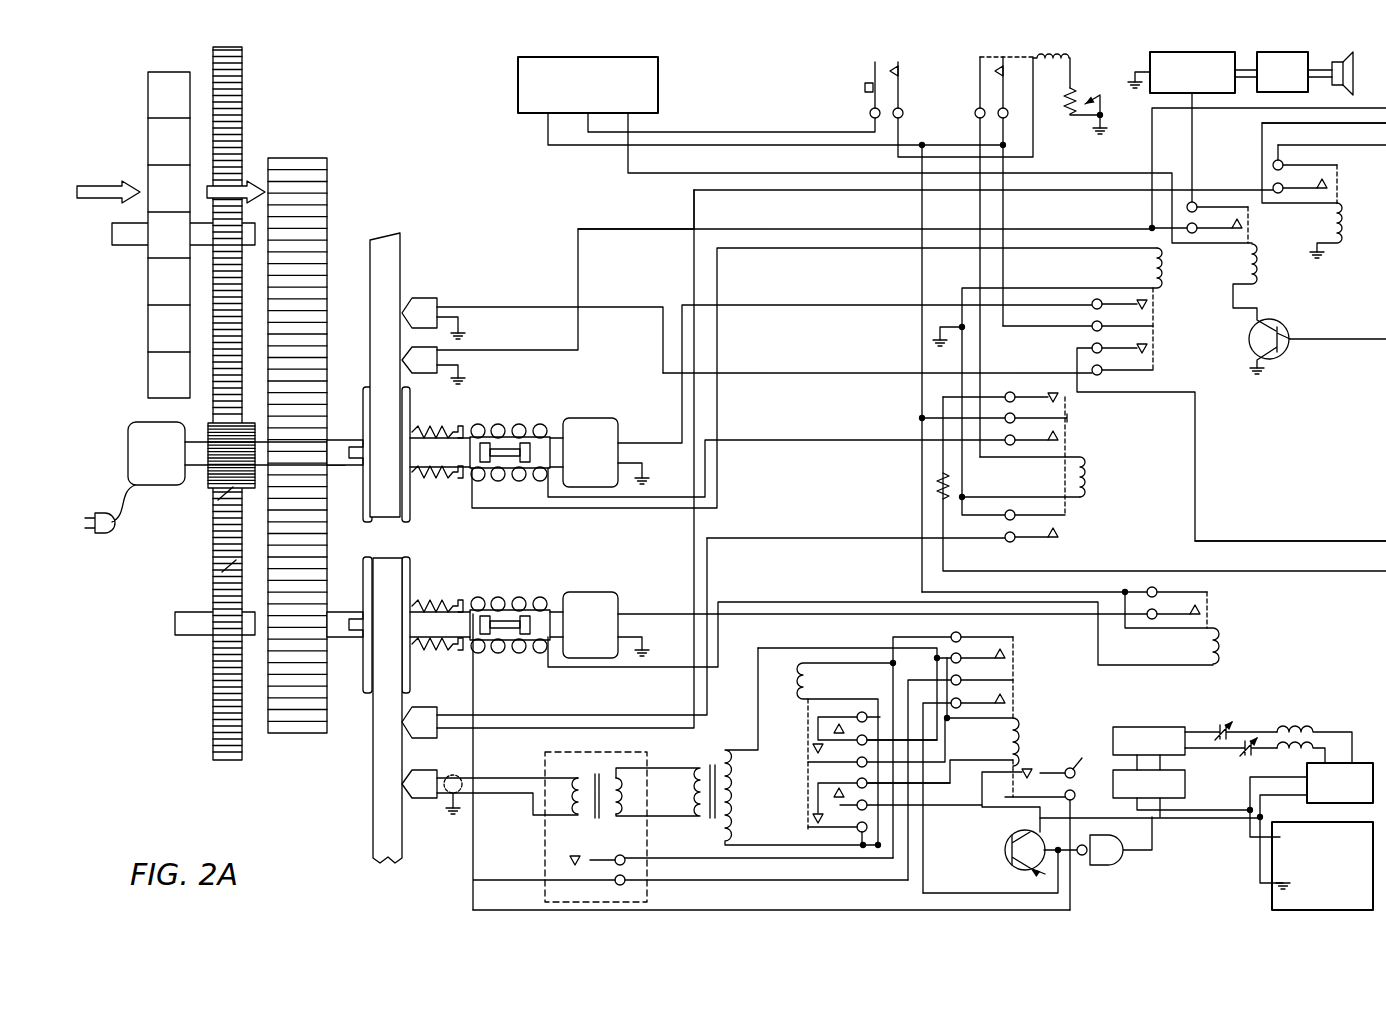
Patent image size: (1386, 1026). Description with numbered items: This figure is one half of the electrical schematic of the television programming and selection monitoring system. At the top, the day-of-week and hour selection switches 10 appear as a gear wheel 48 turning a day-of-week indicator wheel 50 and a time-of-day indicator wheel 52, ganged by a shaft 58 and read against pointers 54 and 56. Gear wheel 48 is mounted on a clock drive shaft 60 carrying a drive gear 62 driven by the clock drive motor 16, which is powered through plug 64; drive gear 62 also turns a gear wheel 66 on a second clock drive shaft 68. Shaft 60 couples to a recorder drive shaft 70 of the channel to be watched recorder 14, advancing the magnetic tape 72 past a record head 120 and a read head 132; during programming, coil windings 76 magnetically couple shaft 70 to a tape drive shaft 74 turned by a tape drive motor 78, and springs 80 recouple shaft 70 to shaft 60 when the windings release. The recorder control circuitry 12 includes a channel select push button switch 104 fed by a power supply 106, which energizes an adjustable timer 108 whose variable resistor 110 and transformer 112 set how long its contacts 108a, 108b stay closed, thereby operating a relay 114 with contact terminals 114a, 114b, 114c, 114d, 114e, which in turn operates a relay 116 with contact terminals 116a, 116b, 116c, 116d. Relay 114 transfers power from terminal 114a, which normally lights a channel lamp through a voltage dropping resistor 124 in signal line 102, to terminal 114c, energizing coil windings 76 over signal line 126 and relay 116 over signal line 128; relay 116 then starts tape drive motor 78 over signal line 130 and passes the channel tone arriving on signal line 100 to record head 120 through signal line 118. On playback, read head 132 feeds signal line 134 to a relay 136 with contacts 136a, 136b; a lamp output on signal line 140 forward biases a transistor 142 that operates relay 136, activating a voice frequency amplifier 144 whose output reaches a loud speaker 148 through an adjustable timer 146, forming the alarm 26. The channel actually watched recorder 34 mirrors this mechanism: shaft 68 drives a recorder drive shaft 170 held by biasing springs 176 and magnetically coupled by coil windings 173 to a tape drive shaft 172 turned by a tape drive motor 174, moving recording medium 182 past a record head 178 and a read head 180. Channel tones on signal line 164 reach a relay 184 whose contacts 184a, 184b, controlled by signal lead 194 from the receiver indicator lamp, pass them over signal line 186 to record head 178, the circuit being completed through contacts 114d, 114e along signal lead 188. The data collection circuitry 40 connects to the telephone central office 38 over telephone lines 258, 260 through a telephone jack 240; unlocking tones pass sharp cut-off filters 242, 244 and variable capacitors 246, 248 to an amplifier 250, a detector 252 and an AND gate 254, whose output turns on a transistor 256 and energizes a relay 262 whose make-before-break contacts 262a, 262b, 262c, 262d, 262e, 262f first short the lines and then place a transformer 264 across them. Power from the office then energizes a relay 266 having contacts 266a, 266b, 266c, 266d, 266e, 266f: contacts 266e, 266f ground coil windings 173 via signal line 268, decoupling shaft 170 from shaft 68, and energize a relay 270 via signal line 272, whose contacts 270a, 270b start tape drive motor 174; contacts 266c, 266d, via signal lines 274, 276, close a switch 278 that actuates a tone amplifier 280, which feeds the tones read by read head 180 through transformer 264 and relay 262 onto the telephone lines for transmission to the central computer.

The day-of-week and hour selection switches 10 is at (294, 123).
The recorder control circuitry 12 is at (1100, 450).
The channel to be watched recorder 14 is at (484, 302).
The clock drive motor 16 is at (121, 428).
The alarm 26 is at (1272, 103).
The channel actually watched recorder 34 is at (507, 593).
The telephone central office 38 is at (1328, 890).
The data collection circuitry 40 is at (1032, 722).
The gear wheel 48 is at (243, 132).
The day-of-week indicator gear wheel 50 is at (148, 103).
The time-of-day indicator gear wheel 52 is at (327, 212).
The pointer 54 is at (110, 190).
The pointer 56 is at (255, 184).
The shaft 58 is at (142, 235).
The clock drive shaft 60 is at (208, 480).
The drive gear 62 is at (218, 500).
The plug 64 is at (112, 533).
The gear wheel 66 is at (222, 572).
The clock drive shaft 68 is at (200, 623).
The recorder drive shaft 70 is at (358, 435).
The recording medium 72 is at (402, 268).
The tape drive shaft 74 is at (552, 438).
The coil windings 76 is at (522, 428).
The tape drive motor 78 is at (607, 420).
The springs 80 is at (440, 428).
The signal line 100 is at (1295, 541).
The signal line 102 is at (1295, 572).
The channel select push button switch 104 is at (872, 82).
The power supply 106 is at (660, 90).
The adjustable timer 108 is at (1000, 56).
The contact 108a is at (985, 90).
The contact 108b is at (1000, 88).
The variable resistor 110 is at (1066, 100).
The transformer 112 is at (1072, 60).
The relay 114 is at (1083, 480).
The contact terminal 114a is at (1014, 393).
The contact terminal 114b is at (1016, 416).
The contact terminal 114c is at (1016, 438).
The contact terminal 114d is at (1005, 518).
The contact terminal 114e is at (1010, 542).
The relay 116 is at (1162, 272).
The contact terminal 116a is at (1096, 298).
The contact terminal 116b is at (1092, 325).
The contact terminal 116c is at (1092, 347).
The contact terminal 116d is at (1092, 369).
The signal line 118 is at (860, 374).
The record head 120 is at (425, 310).
The voltage dropping resistor 124 is at (930, 485).
The signal line 126 is at (852, 442).
The signal line 128 is at (866, 248).
The signal line 130 is at (810, 306).
The read head 132 is at (430, 360).
The signal line 134 is at (838, 230).
The relay 136 is at (1258, 265).
The contact 136a is at (1220, 208).
The contact 136b is at (1220, 229).
The signal line 140 is at (1355, 339).
The transistor 142 is at (1282, 318).
The voice frequency amplifier 144 is at (1103, 117).
The adjustable timer 146 is at (1298, 58).
The loud speaker 148 is at (1350, 68).
The signal line 164 is at (1348, 146).
The recorder drive shaft 170 is at (358, 608).
The tape drive shaft 172 is at (562, 612).
The coil windings 173 is at (528, 650).
The tape drive motor 174 is at (610, 600).
The biasing springs 176 is at (440, 597).
The record head 178 is at (425, 712).
The read head 180 is at (432, 795).
The recording medium 182 is at (388, 792).
The relay 184 is at (1340, 228).
The contact 184a is at (1274, 162).
The contact 184b is at (1274, 185).
The signal line 186 is at (765, 192).
The signal lead 188 is at (812, 540).
The signal lead 194 is at (1348, 124).
The telephone jack 240 is at (1310, 803).
The filter 242 is at (1296, 725).
The filter 244 is at (1298, 757).
The variable capacitor 246 is at (1220, 724).
The variable capacitor 248 is at (1247, 757).
The amplifier 250 is at (1148, 727).
The detector 252 is at (1186, 793).
The AND gate 254 is at (1112, 866).
The transistor 256 is at (1005, 853).
The telephone line 258 is at (1248, 822).
The telephone line 260 is at (1204, 820).
The relay 262 is at (812, 683).
The contact 262a is at (872, 697).
The contact 262b is at (864, 745).
The contact 262c is at (862, 767).
The contact 262d is at (858, 788).
The contact 262e is at (858, 810).
The contact 262f is at (860, 832).
The transformer 264 is at (738, 792).
The relay 266 is at (1022, 745).
The relay contact 266a is at (960, 635).
The relay contact 266b is at (962, 657).
The contact 266c is at (962, 680).
The contact 266d is at (962, 702).
The contact 266e is at (1037, 789).
The contact 266f is at (1061, 850).
The signal line 268 is at (848, 911).
The relay 270 is at (1222, 655).
The contact 270a is at (1152, 585).
The contact 270b is at (1195, 620).
The signal line 272 is at (872, 602).
The signal line 274 is at (770, 858).
The signal line 276 is at (738, 878).
The switch 278 is at (560, 883).
The tone amplifier 280 is at (618, 771).